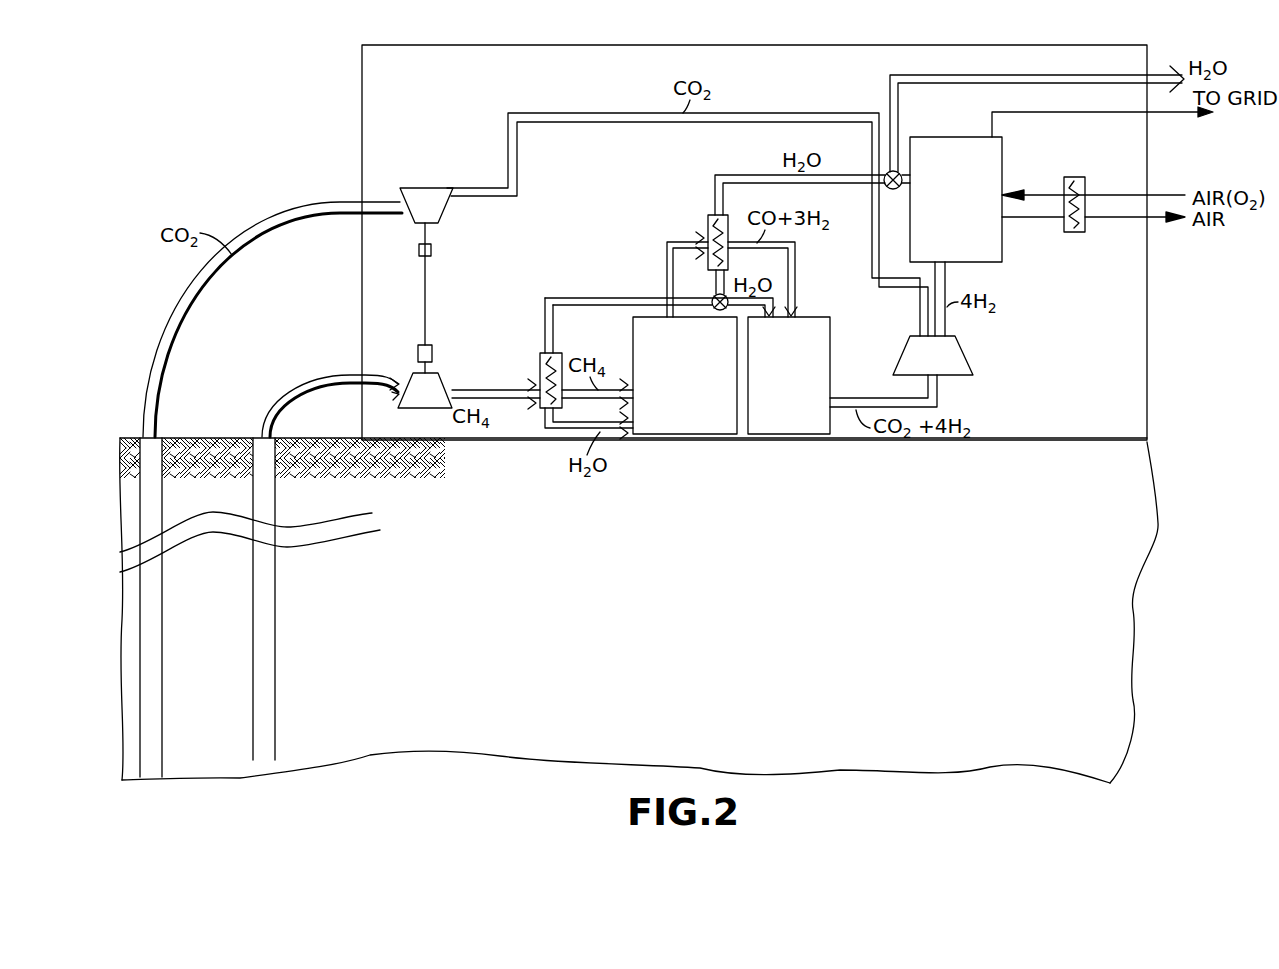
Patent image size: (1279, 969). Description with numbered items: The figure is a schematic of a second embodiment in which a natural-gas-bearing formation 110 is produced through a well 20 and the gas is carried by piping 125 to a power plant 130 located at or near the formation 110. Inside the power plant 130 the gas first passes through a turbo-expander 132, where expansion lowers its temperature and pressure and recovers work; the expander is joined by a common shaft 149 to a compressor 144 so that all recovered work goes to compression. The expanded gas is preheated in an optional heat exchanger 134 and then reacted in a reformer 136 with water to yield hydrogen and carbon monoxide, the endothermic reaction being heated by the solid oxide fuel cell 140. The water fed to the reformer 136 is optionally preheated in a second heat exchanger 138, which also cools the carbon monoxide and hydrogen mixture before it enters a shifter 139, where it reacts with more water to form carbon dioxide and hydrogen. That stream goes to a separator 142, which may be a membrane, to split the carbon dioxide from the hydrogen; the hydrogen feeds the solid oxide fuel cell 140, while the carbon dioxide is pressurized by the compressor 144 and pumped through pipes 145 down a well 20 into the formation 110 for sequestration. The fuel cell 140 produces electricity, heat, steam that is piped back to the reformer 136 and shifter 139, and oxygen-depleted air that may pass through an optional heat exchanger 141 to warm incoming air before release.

The subterranean formation / hydrocarbon-bearing zone 20 is at (250, 448).
The formation 110 is at (418, 613).
The piping 125 is at (312, 383).
The power plant 130 is at (361, 128).
The turbo-expander 132 is at (445, 379).
The heat exchanger 134 is at (538, 358).
The reformer 136 is at (632, 338).
The second heat exchanger 138 is at (705, 223).
The shifter 139 is at (832, 338).
The solid oxide fuel cell 140 is at (1003, 166).
The heat exchanger 141 is at (1077, 178).
The separator 142 is at (962, 346).
The compressor 144 is at (445, 205).
The pipes or tubing 145 is at (200, 305).
The shaft linking turbine and compressor 149 is at (427, 301).